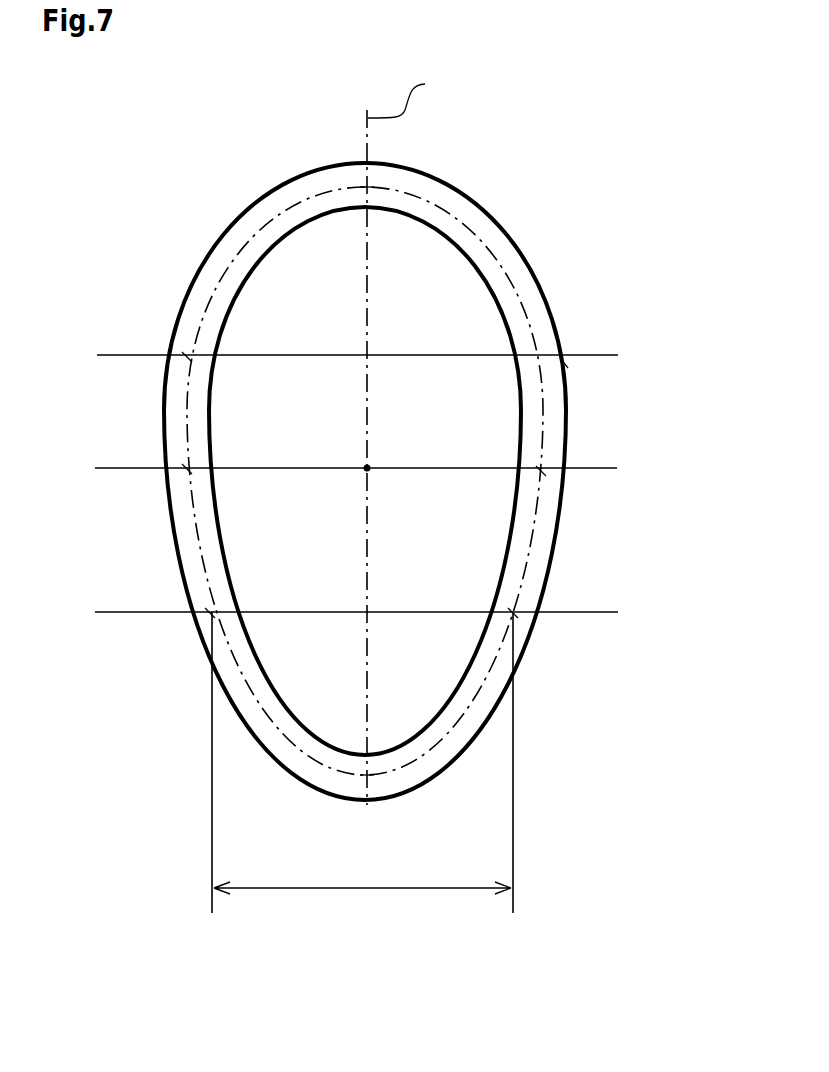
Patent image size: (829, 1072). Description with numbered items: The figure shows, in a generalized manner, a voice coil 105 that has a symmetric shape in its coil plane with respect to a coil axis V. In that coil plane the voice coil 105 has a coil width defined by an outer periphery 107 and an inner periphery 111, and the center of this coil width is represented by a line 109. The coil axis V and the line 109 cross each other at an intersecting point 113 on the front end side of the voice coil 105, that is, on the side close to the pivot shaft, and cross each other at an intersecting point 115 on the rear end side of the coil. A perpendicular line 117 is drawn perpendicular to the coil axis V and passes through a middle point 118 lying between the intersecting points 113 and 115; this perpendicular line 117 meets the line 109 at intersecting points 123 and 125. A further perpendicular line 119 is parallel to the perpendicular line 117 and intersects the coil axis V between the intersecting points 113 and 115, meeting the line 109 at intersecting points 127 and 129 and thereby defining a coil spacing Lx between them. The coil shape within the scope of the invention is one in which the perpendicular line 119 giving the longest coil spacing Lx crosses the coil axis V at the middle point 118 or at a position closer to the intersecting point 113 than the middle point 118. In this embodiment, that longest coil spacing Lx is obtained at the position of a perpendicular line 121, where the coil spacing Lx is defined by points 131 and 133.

The voice coil 105 is at (391, 481).
The outer periphery 107 is at (262, 192).
The line 109 is at (420, 197).
The inner periphery 111 is at (230, 290).
The intersecting point 113 is at (370, 186).
The intersecting point 115 is at (367, 778).
The perpendicular line 117 is at (610, 470).
The middle point 118 is at (370, 466).
The perpendicular line 119 is at (586, 613).
The perpendicular line 121 is at (612, 355).
The intersecting point 123 is at (180, 470).
The intersecting point 125 is at (540, 472).
The intersecting point 127 is at (200, 615).
The intersecting point 129 is at (513, 613).
The point 131 is at (185, 358).
The point 133 is at (563, 363).